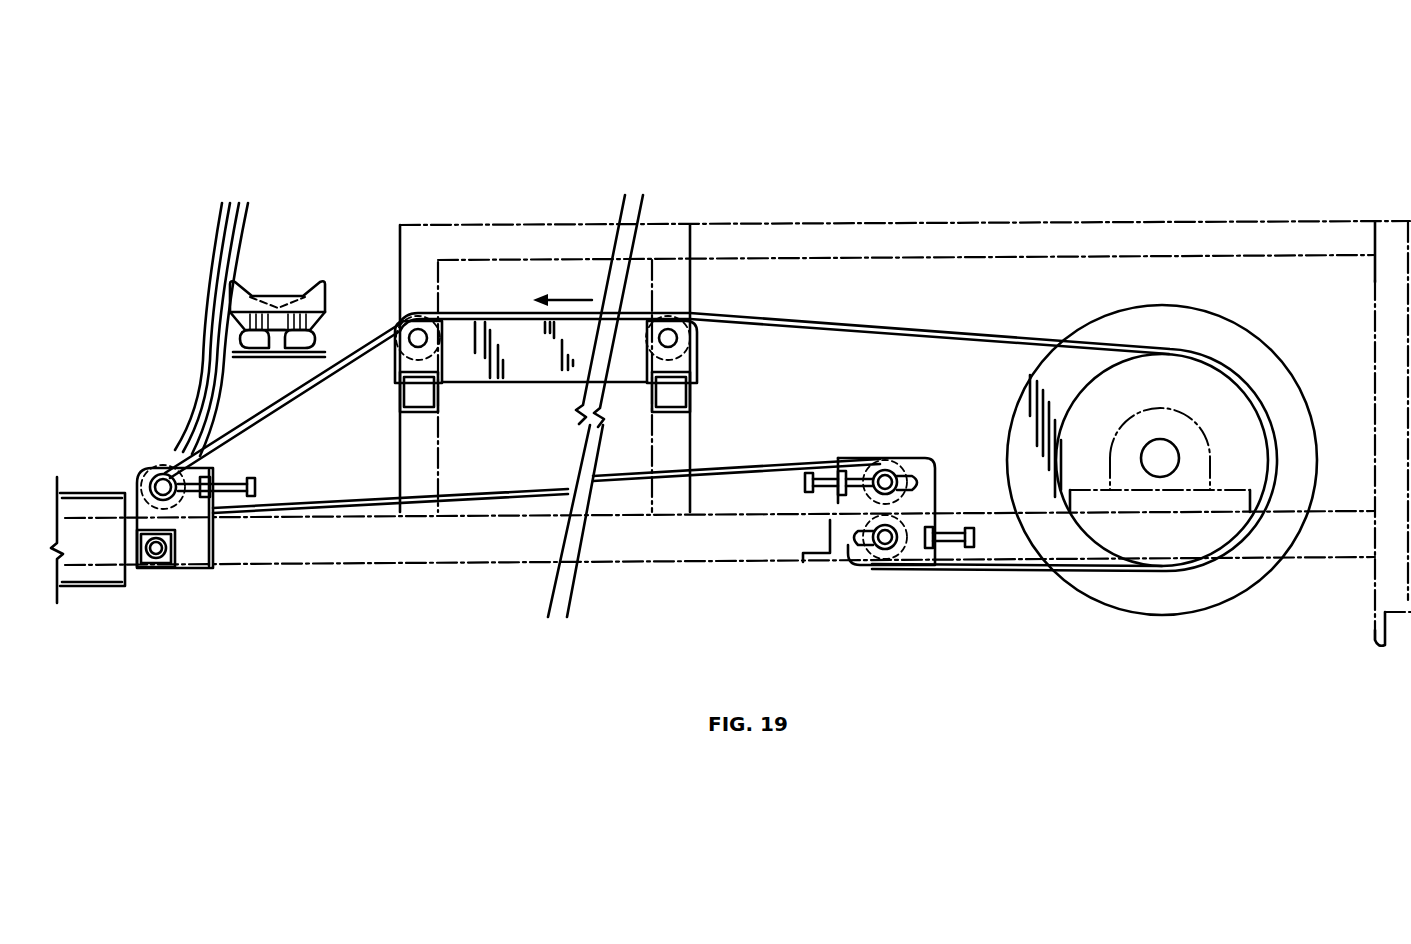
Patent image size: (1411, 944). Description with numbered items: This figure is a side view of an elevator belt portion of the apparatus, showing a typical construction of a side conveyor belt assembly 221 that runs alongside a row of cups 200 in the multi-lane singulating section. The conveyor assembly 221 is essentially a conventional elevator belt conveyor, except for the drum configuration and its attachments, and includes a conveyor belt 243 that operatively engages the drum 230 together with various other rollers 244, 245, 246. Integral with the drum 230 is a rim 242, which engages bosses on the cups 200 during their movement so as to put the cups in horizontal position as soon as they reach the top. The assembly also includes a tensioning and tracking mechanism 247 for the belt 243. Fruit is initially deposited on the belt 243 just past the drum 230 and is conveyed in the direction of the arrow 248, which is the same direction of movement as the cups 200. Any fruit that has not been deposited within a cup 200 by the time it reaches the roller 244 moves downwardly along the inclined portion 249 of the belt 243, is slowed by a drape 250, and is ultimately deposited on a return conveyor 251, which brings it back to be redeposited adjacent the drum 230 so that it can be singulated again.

The cup 200 is at (288, 268).
The side conveyor belt assembly 221 is at (1043, 294).
The drum 230 is at (1250, 430).
The rim 242 is at (1243, 346).
The conveyor belt 243 is at (962, 333).
The roller 244 is at (418, 318).
The roller 245 is at (690, 318).
The roller 246 is at (160, 472).
The tensioning and tracking mechanism 247 is at (868, 580).
The arrow 248 is at (564, 292).
The inclined portion 249 is at (296, 393).
The drape 250 is at (203, 332).
The return conveyor 251 is at (97, 482).